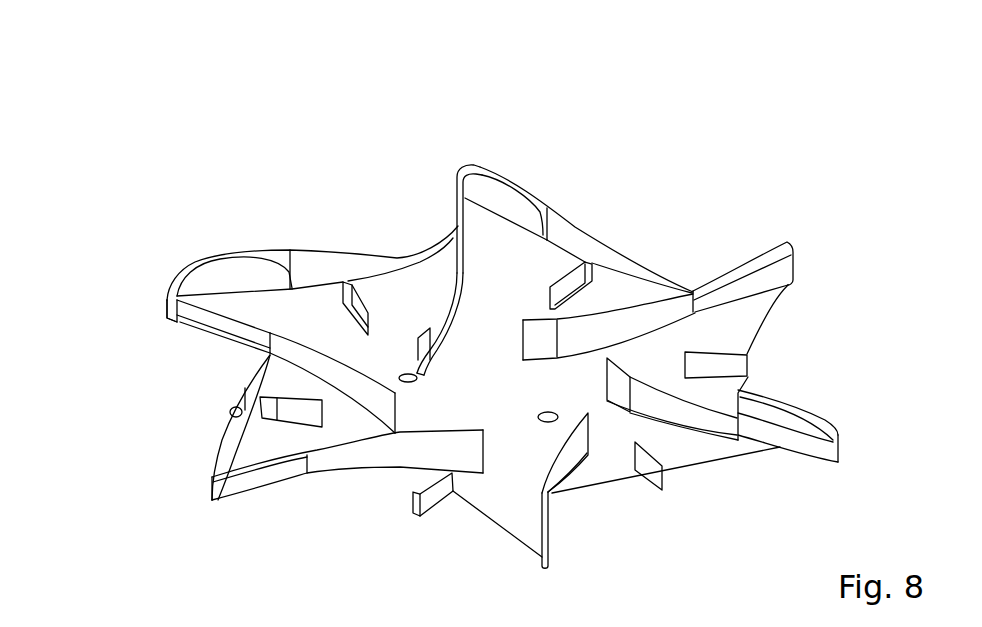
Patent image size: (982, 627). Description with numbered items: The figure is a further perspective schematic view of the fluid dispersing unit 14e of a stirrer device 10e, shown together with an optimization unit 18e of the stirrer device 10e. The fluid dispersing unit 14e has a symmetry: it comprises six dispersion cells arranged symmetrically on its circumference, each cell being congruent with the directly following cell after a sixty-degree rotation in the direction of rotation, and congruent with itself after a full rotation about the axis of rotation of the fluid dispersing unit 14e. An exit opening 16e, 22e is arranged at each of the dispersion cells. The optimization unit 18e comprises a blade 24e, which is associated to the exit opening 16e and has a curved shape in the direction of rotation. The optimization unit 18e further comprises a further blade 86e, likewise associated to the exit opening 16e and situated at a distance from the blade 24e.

The stirrer device 10e is at (181, 135).
The fluid dispersing unit 14e is at (277, 198).
The exit opening 16e is at (219, 286).
The optimization unit 18e is at (154, 339).
The exit opening 22e is at (236, 430).
The blade 24e is at (166, 309).
The further blade 86e is at (366, 305).